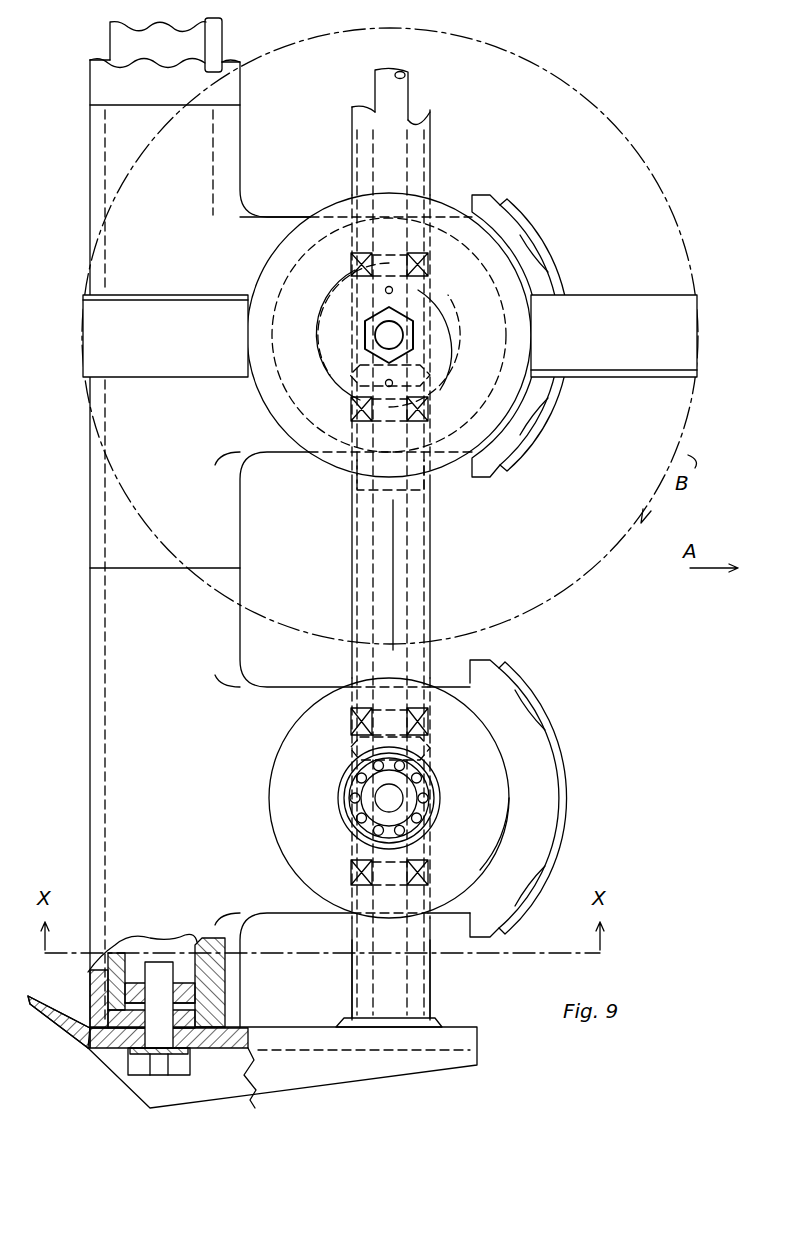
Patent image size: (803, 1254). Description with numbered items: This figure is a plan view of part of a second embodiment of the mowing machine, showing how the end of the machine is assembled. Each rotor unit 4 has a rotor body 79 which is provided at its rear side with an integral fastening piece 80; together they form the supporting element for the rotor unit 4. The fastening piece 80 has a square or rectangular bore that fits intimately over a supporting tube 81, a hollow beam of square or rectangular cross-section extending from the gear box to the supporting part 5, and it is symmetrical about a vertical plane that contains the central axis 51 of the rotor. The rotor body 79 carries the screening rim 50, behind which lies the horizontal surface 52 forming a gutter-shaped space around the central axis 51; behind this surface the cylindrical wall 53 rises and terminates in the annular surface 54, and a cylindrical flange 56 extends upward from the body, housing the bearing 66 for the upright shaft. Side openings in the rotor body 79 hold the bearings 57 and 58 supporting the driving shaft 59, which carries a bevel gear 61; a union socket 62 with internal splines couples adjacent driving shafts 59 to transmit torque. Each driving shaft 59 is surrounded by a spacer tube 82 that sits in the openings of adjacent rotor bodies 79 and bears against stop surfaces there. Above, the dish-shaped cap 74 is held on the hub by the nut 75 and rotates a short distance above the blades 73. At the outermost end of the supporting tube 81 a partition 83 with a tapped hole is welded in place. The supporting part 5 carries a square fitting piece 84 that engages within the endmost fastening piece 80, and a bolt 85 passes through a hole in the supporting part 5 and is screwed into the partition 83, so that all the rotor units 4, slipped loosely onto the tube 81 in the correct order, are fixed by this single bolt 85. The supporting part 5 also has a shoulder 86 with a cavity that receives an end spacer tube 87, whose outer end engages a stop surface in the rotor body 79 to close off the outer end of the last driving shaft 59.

The rotor unit 4 is at (615, 96).
The supporting part 5 is at (81, 1066).
The screening rim 50 is at (556, 262).
The central axis 51 is at (385, 340).
The horizontal surface 52 is at (522, 245).
The cylindrical wall 53 is at (505, 832).
The annular surface 54 is at (290, 770).
The cylindrical flange 56 is at (340, 792).
The bearing 57 is at (351, 405).
The bearing 58 is at (351, 268).
The driving shaft 59 is at (395, 95).
The bevel gear 61 is at (430, 373).
The union socket 62 is at (348, 478).
The bearing 66 is at (362, 810).
The blade 73 is at (645, 300).
The cap 74 is at (262, 262).
The nut 75 is at (412, 330).
The rotor body 79 is at (285, 215).
The fastening piece 80 is at (133, 460).
The supporting tube 81 is at (195, 40).
The spacer tube 82 is at (424, 160).
The partition 83 is at (132, 985).
The square fitting piece 84 is at (205, 1005).
The bolt 85 is at (165, 1062).
The shoulder 86 is at (340, 1018).
The end spacer tube 87 is at (430, 986).